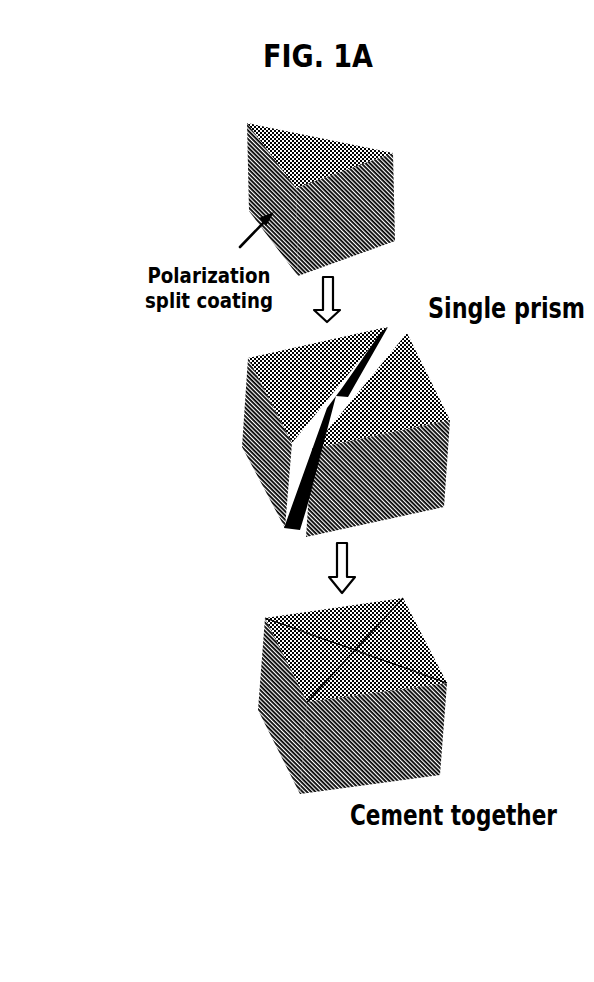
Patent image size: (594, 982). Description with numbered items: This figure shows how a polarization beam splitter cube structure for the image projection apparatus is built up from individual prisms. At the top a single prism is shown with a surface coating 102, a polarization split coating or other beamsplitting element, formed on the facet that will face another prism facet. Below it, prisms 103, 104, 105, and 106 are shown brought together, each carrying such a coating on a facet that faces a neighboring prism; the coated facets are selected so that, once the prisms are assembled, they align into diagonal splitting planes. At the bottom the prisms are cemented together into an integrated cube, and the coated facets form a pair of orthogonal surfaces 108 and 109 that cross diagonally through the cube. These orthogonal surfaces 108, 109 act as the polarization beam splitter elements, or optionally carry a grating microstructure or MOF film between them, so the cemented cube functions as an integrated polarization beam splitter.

The surface coating 102 is at (377, 203).
The prism 103 is at (360, 340).
The prism 104 is at (415, 385).
The prism 105 is at (420, 487).
The prism 106 is at (275, 473).
The orthogonal surface 108 is at (412, 672).
The orthogonal surface 109 is at (328, 682).